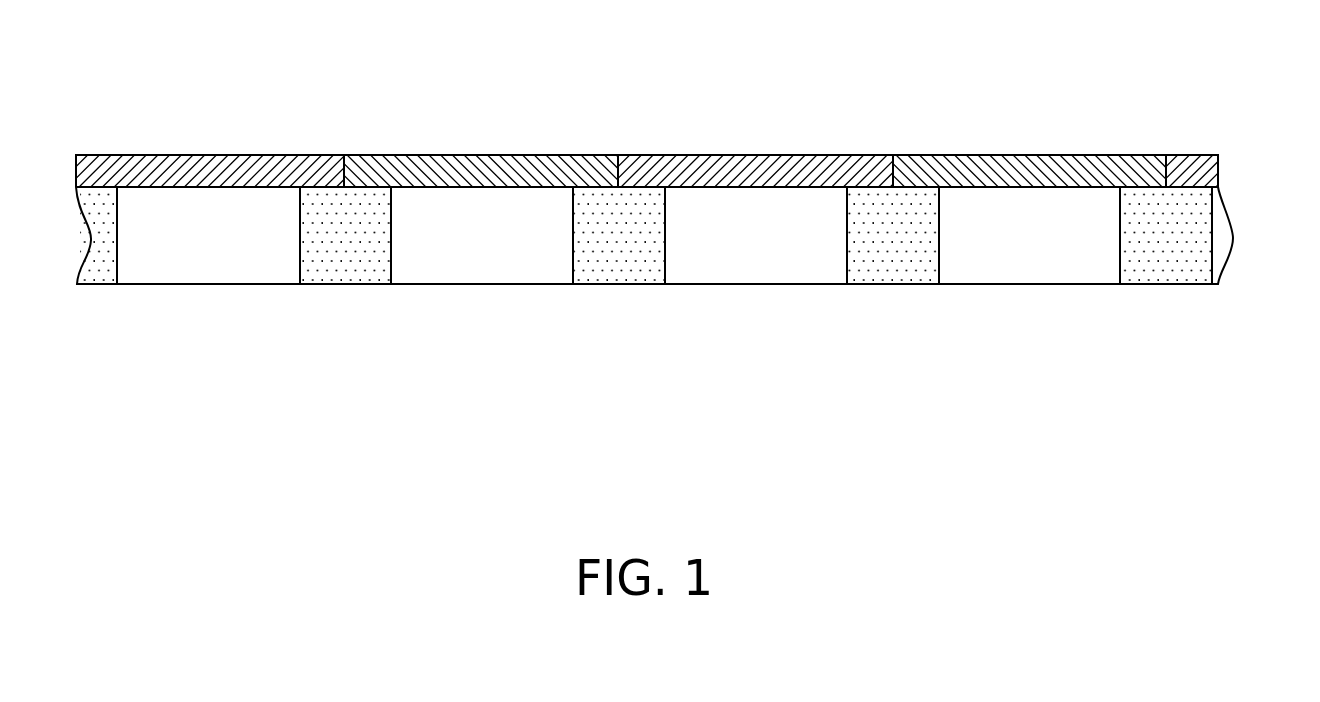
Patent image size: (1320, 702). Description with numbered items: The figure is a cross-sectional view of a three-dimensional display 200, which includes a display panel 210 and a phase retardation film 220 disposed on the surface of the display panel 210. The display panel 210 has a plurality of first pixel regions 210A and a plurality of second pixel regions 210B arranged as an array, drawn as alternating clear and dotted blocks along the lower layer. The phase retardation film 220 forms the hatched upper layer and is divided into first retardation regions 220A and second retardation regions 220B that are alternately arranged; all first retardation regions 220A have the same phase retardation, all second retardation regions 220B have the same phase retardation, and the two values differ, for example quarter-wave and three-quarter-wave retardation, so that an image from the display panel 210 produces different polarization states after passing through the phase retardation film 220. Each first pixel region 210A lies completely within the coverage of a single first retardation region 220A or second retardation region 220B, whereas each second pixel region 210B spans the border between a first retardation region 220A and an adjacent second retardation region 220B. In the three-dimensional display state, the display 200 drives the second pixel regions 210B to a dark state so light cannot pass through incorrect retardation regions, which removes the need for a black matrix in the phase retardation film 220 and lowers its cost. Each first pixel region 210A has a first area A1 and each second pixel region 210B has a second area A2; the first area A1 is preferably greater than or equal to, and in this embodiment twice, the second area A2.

The 3D display 200 is at (1226, 458).
The display panel 210 is at (692, 286).
The first pixel regions 210A is at (205, 272).
The second pixel regions 210B is at (357, 272).
The phase retardation film 220 is at (674, 127).
The first retardation regions 220A is at (195, 163).
The second retardation regions 220B is at (470, 163).
The first area A1 is at (847, 287).
The second area A2 is at (940, 287).